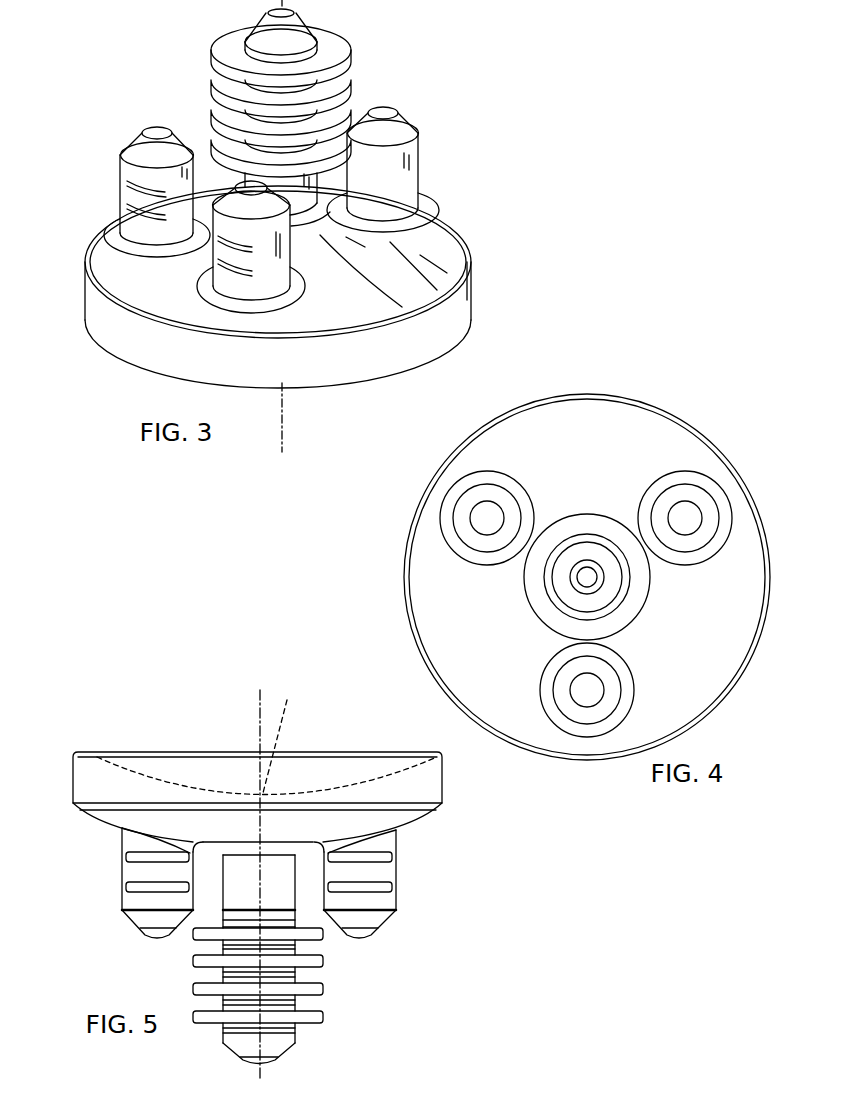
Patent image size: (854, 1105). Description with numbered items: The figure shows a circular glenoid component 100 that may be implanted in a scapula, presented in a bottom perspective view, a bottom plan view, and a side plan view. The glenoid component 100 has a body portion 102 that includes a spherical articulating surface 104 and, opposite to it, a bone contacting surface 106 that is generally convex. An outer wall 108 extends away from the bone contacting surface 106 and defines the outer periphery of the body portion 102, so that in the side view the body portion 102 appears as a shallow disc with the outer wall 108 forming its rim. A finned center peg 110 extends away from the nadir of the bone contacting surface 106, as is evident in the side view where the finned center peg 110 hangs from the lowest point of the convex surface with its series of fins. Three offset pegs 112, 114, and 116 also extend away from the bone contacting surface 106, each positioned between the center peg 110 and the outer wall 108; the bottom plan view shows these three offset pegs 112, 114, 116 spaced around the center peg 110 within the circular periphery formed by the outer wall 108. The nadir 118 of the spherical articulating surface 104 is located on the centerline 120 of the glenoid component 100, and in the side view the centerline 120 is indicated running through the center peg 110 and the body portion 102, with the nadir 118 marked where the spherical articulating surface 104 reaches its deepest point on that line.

In FIG. 3, the glenoid component 100 is at (490, 168).
In FIG. 4, the glenoid component 100 is at (703, 367).
In FIG. 5, the glenoid component 100 is at (68, 737).
In FIG. 3, the body portion 102 is at (475, 255).
In FIG. 4, the body portion 102 is at (587, 577).
In FIG. 5, the body portion 102 is at (450, 808).
In FIG. 5, the spherical articulating surface 104 is at (325, 790).
In FIG. 3, the bone contacting surface 106 is at (97, 247).
In FIG. 4, the bone contacting surface 106 is at (577, 459).
In FIG. 5, the bone contacting surface 106 is at (418, 813).
In FIG. 3, the outer wall 108 is at (475, 287).
In FIG. 4, the outer wall 108 is at (587, 577).
In FIG. 5, the outer wall 108 is at (447, 785).
In FIG. 3, the finned center peg 110 is at (210, 97).
In FIG. 4, the finned center peg 110 is at (565, 518).
In FIG. 5, the finned center peg 110 is at (325, 997).
In FIG. 3, the offset peg 112 is at (122, 154).
In FIG. 4, the offset peg 112 is at (440, 505).
In FIG. 5, the offset peg 112 is at (148, 937).
In FIG. 3, the offset peg 114 is at (213, 258).
In FIG. 4, the offset peg 114 is at (537, 702).
In FIG. 5, the offset peg 114 is at (380, 927).
In FIG. 3, the offset peg 116 is at (420, 167).
In FIG. 4, the offset peg 116 is at (697, 472).
In FIG. 5, the nadir 118 is at (297, 735).
In FIG. 3, the centerline 120 is at (303, 408).
In FIG. 5, the centerline 120 is at (260, 704).